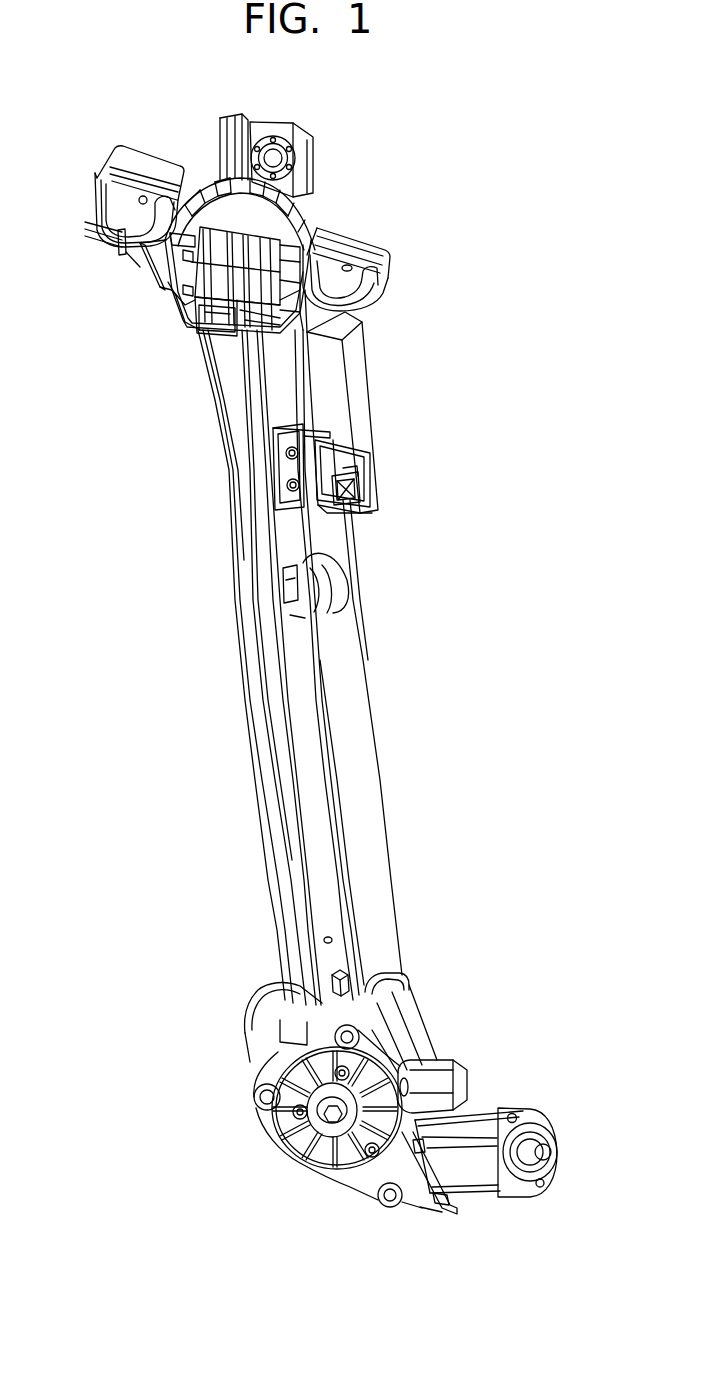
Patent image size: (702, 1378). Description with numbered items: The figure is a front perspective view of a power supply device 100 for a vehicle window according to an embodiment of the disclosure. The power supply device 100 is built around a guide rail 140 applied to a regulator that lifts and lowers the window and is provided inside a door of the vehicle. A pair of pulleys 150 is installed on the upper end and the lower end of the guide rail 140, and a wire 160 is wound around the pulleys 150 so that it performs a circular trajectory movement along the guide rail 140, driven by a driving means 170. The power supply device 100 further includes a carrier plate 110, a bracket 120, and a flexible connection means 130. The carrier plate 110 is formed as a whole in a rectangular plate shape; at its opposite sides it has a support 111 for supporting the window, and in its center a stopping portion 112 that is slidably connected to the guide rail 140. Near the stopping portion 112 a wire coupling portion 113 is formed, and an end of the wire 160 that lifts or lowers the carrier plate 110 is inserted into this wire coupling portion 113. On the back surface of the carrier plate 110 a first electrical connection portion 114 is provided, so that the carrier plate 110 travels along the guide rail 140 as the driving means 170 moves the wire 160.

The power supply device 100 is at (307, 651).
The carrier plate 110 is at (156, 262).
The support 111 is at (385, 281).
The stopping portion 112 is at (208, 175).
The wire coupling portion 113 is at (177, 312).
The first electrical connection portion 114 is at (128, 253).
The bracket 120 is at (342, 615).
The flexible connection means 130 is at (215, 391).
The guide rail 140 is at (302, 712).
The pulley 150 is at (300, 160).
The wire 160 is at (380, 752).
The driving means 170 is at (483, 1120).